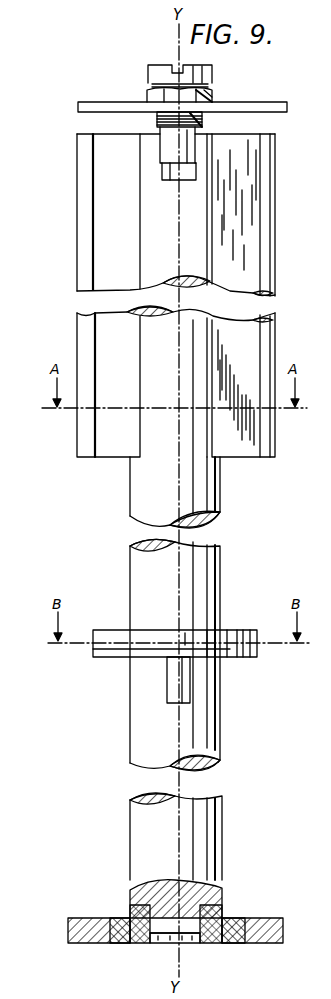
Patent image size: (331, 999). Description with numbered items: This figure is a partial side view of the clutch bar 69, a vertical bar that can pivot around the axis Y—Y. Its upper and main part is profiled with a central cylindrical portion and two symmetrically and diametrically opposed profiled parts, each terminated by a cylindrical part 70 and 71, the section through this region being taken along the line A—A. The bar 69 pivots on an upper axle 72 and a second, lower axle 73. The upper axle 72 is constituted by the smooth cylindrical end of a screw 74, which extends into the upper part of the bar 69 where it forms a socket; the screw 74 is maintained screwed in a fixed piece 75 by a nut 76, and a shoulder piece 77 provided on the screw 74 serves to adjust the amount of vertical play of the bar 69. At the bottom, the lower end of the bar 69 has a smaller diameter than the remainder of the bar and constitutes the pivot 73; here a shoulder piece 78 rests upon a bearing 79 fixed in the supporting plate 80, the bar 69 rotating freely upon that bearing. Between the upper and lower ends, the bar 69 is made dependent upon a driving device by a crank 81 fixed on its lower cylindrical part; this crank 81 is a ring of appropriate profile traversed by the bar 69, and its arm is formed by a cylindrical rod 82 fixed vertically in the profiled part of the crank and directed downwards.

The clutch bar 69 is at (220, 594).
The cylindrical part 70 is at (86, 167).
The cylindrical part 71 is at (268, 249).
The upper axle 72 is at (190, 140).
The lower axle 73 is at (188, 925).
The screw 74 is at (216, 58).
The fixed piece 75 is at (262, 105).
The nut 76 is at (211, 96).
The shoulder piece 77 is at (157, 125).
The shoulder piece 78 is at (220, 903).
The bearing 79 is at (128, 944).
The supporting plate 80 is at (263, 936).
The crank 81 is at (227, 636).
The cylindrical rod 82 is at (167, 703).